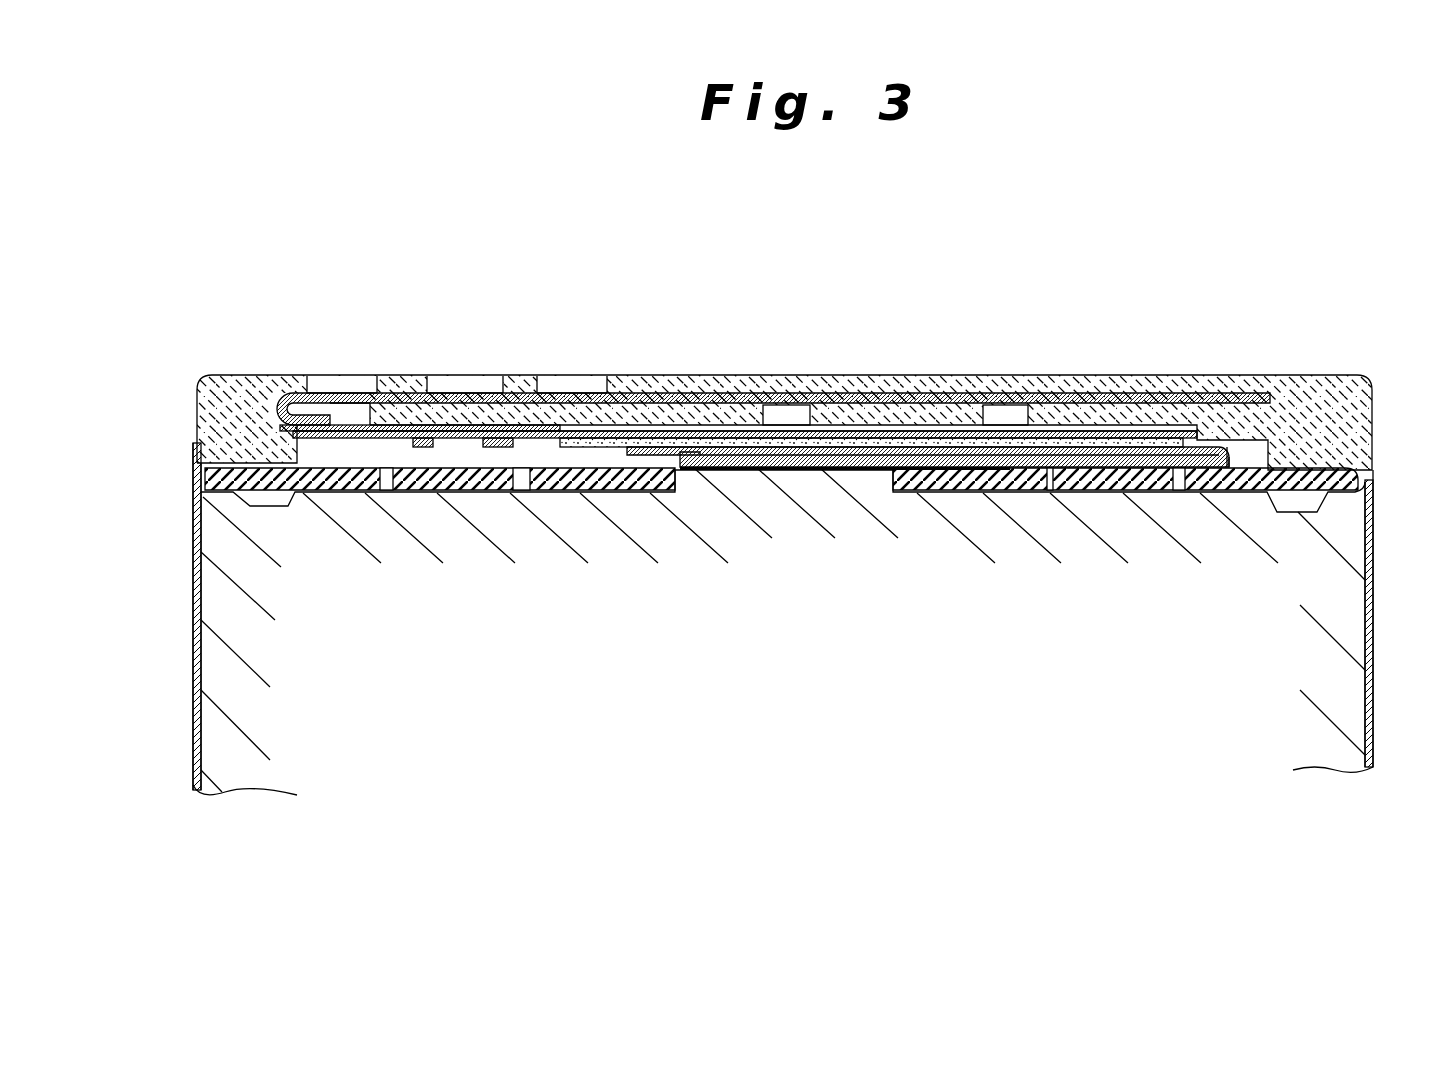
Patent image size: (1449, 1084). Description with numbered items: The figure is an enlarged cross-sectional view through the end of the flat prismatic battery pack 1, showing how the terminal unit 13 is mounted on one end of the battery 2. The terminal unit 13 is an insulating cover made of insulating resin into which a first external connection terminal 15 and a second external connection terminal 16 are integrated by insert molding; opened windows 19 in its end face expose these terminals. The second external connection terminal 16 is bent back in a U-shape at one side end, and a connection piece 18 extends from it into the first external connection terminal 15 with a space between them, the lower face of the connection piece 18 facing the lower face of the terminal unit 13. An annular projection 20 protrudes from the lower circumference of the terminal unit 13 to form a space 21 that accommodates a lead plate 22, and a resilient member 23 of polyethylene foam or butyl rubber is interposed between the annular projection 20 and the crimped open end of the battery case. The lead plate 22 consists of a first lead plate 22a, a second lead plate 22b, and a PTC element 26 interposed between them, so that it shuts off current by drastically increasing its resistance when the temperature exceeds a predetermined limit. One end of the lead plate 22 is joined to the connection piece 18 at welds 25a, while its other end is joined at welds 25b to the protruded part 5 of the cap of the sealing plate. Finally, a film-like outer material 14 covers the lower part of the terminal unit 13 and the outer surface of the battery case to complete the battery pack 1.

The battery pack 1 is at (1277, 308).
The battery 2 is at (1357, 680).
The protruded part 5 is at (795, 478).
The terminal unit 13 is at (243, 375).
The film-like outer material 14 is at (192, 722).
The first external connection terminal 15 is at (577, 387).
The second external connection terminal 16 is at (348, 385).
The connection piece 18 is at (388, 428).
The opened windows 19 is at (540, 385).
The annular projection 20 is at (235, 442).
The space 21 is at (512, 455).
The lead plate 22 is at (1015, 383).
The first lead plate 22a is at (540, 443).
The second lead plate 22b is at (1203, 450).
The resilient member 23 is at (1313, 472).
The welds 25a is at (500, 448).
The welds 25b is at (830, 470).
The PTC element 26 is at (1127, 440).